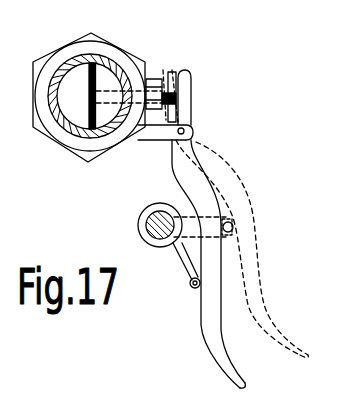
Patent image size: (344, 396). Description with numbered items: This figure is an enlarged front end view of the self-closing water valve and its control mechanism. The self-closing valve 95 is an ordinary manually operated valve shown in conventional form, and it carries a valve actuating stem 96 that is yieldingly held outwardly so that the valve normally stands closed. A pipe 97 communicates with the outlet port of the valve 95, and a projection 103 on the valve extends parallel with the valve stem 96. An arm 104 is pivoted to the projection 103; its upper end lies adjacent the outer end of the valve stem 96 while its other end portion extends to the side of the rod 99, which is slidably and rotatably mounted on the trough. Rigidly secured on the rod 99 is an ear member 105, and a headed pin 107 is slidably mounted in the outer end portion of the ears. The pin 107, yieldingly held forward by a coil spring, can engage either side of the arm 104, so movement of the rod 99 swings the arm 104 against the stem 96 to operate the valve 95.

The self-closing valve 95 is at (119, 61).
The valve actuating stem 96 is at (173, 72).
The pipe 97 is at (62, 132).
The rod 99 is at (160, 203).
The projection 103 is at (153, 141).
The arm 104 is at (203, 325).
The ear member 105 is at (175, 252).
The headed pin 107 is at (188, 292).